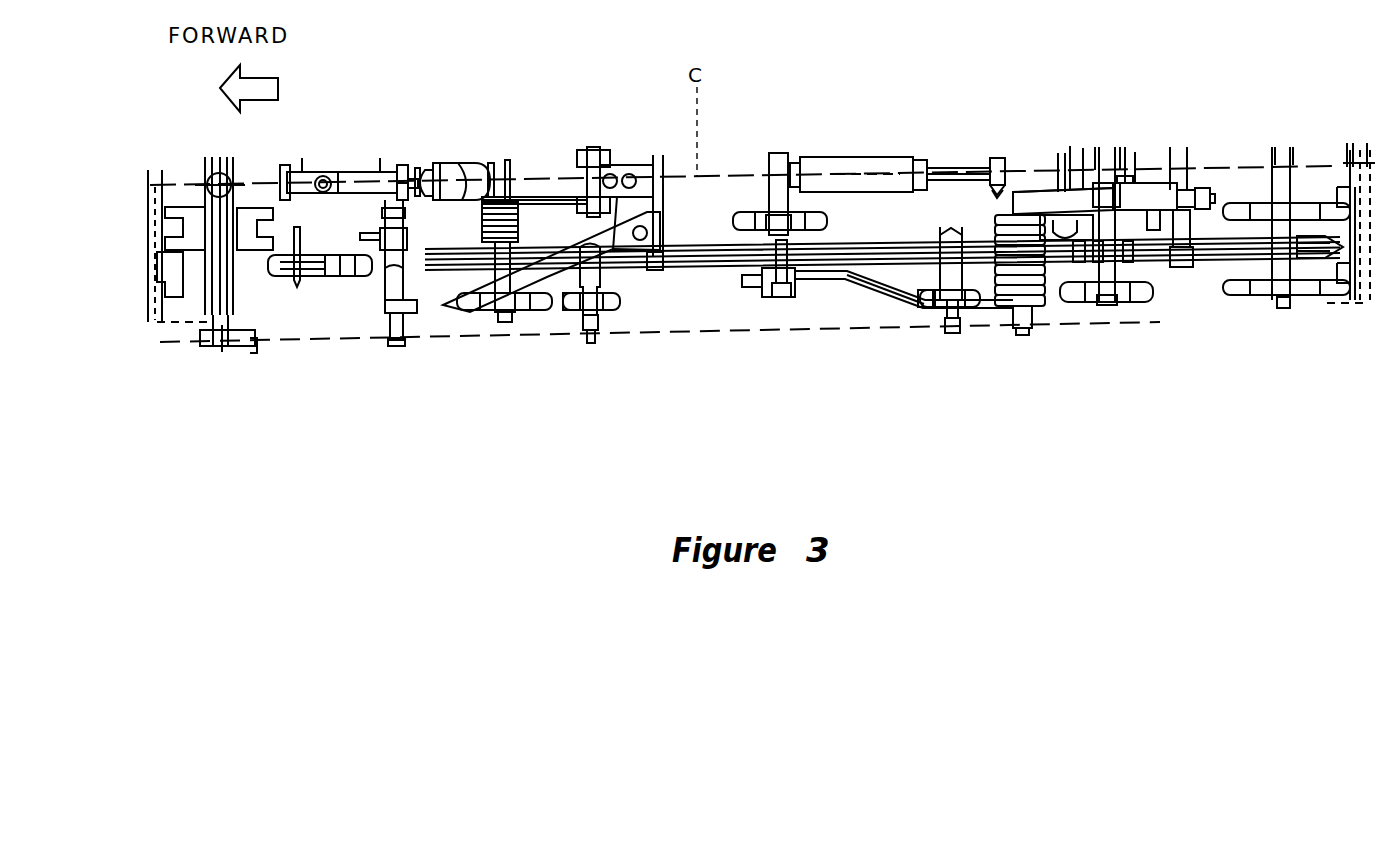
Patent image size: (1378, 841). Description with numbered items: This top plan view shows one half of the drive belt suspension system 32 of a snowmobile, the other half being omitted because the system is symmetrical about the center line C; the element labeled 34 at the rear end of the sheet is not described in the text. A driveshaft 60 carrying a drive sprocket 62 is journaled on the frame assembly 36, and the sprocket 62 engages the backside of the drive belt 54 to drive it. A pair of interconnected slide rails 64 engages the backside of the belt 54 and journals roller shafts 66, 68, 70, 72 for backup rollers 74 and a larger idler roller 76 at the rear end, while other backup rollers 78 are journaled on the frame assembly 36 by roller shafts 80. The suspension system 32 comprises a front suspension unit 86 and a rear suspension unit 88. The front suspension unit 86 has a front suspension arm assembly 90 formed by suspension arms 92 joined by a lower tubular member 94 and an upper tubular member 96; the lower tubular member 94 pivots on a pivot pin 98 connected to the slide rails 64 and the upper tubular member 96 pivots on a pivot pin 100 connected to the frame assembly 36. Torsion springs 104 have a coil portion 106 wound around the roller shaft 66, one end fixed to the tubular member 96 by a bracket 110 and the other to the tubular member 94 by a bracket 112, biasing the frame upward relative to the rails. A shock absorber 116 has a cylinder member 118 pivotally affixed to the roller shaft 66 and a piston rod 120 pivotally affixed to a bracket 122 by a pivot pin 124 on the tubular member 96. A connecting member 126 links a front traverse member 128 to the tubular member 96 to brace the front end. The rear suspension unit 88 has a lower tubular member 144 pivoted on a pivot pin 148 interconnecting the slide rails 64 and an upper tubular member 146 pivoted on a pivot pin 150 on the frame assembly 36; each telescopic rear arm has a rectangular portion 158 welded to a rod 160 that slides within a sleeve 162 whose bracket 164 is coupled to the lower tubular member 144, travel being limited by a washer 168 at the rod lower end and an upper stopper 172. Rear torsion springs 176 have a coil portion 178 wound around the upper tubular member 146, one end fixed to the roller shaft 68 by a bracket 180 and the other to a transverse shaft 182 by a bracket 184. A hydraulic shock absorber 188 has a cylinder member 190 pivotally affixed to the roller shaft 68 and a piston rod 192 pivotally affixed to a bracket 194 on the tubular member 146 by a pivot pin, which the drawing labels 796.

The suspension system 32 is at (770, 84).
The frame rail 34 is at (1334, 153).
The frame assembly 36 is at (805, 335).
The drive belt 54 is at (157, 322).
The driveshaft 60 is at (227, 347).
The drive sprocket 62 is at (182, 215).
The slide rails 64 is at (717, 272).
The roller shaft 66 is at (512, 315).
The roller shaft 68 is at (770, 180).
The roller shaft 70 is at (1116, 302).
The roller shaft 72 is at (1297, 297).
The backup rollers 74 is at (470, 310).
The idler roller 76 is at (1253, 167).
The backup rollers 78 is at (568, 312).
The roller shafts 80 is at (593, 343).
The front suspension unit 86 is at (526, 105).
The rear suspension unit 88 is at (1027, 130).
The front suspension arm assembly 90 is at (670, 226).
The suspension arms 92 is at (441, 312).
The lower tubular member 94 is at (665, 186).
The upper tubular member 96 is at (387, 280).
The pivot pin 98 is at (653, 276).
The pivot pin 100 is at (395, 343).
The torsion springs 104 is at (535, 197).
The coil portion 106 is at (518, 220).
The bracket 110 is at (380, 228).
The bracket 112 is at (570, 188).
The shock absorber 116 is at (472, 158).
The cylinder member 118 is at (443, 160).
The piston rod 120 is at (420, 165).
The bracket 122 is at (390, 165).
The pivot pin 124 is at (403, 163).
The connecting member 126 is at (347, 172).
The front traverse member 128 is at (295, 222).
The lower tubular member 144 is at (1205, 270).
The upper tubular member 146 is at (1010, 190).
The pivot pin 148 is at (1137, 252).
The pivot pin 150 is at (1027, 335).
The rectangular portion 158 is at (1085, 167).
The columnar portion 160 is at (1193, 165).
The sleeve 162 is at (1150, 183).
The bracket 164 is at (1152, 232).
The washer 168 is at (1213, 168).
The stopper 172 is at (1108, 157).
The torsion springs 176 is at (855, 308).
The coil portion 178 is at (1000, 228).
The bracket 180 is at (760, 313).
The transverse shaft 182 is at (1058, 163).
The bracket 184 is at (1052, 302).
The hydraulic shock absorber 188 is at (848, 155).
The cylinder member 190 is at (895, 165).
The piston rod 192 is at (948, 163).
The bracket 194 is at (993, 158).
The clevis pin 796 is at (1001, 167).